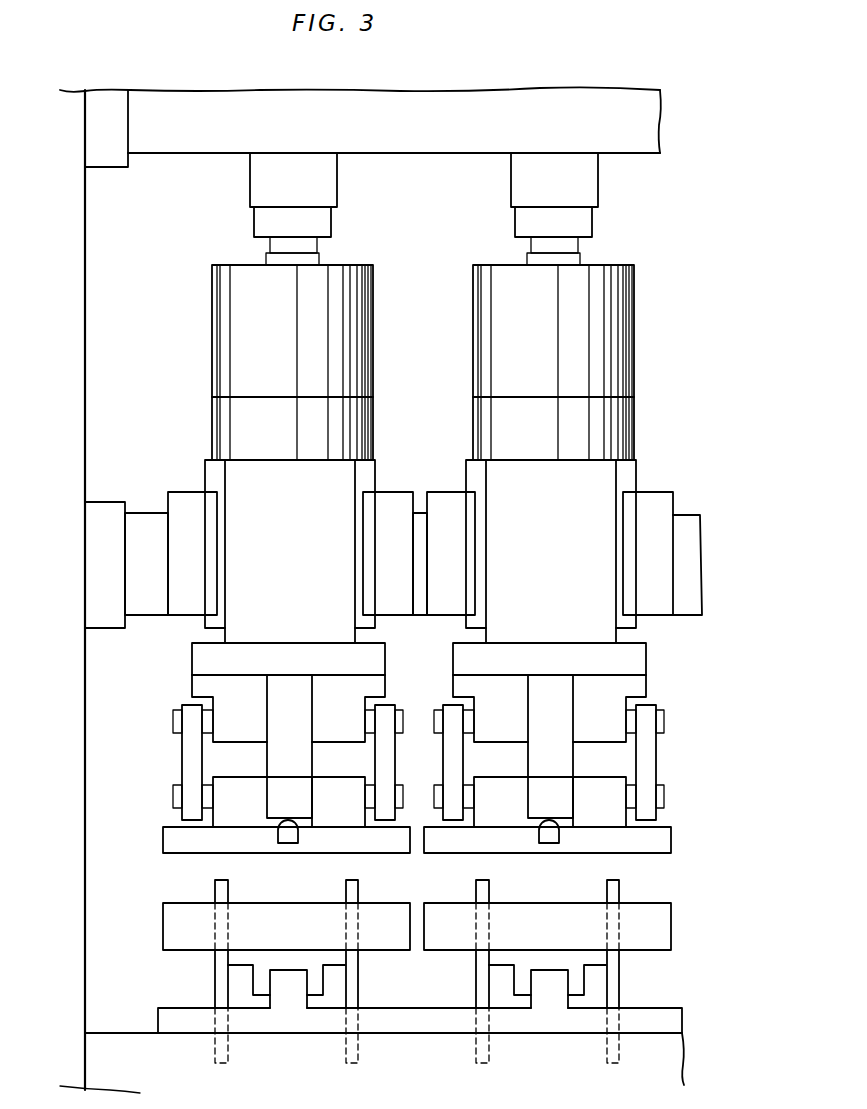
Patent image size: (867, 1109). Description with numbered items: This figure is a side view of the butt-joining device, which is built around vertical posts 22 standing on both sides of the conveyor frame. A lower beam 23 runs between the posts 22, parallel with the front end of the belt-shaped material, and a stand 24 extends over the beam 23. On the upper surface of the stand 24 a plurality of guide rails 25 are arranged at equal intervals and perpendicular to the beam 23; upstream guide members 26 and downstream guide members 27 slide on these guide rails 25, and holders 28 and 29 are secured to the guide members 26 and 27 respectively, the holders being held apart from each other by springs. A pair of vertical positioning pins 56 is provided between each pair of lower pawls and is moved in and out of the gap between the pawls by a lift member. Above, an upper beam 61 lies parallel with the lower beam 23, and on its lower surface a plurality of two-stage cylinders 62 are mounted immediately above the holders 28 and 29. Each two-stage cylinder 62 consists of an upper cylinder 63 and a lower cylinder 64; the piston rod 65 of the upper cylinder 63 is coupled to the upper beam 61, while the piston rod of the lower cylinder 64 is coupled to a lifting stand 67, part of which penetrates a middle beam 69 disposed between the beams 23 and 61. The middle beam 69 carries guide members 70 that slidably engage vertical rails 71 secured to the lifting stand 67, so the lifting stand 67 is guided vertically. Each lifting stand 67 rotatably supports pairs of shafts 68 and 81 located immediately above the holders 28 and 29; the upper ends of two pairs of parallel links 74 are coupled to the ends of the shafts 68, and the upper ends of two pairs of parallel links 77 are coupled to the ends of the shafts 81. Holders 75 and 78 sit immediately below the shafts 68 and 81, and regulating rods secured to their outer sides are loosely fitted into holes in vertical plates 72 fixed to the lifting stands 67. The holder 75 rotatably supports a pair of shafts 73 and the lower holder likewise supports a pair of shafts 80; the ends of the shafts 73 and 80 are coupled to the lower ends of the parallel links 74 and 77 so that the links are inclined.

The vertical posts 22 is at (68, 366).
The beam 23 is at (122, 1045).
The stand 24 is at (652, 1018).
The guide rails 25 is at (287, 992).
The guide members 26 is at (417, 952).
The guide members 27 is at (287, 960).
The holders 28 is at (428, 926).
The holders 29 is at (170, 925).
The positioning pins 56 is at (346, 888).
The upper beam 61 is at (427, 145).
The two-stage cylinders 62 is at (456, 362).
The upper cylinder 63 is at (370, 312).
The lower cylinder 64 is at (367, 423).
The piston rod 65 is at (308, 243).
The lifting stand 67 is at (200, 658).
The shafts 68 is at (418, 717).
The middle beam 69 is at (690, 552).
The guide members 70 is at (370, 546).
The vertical rails 71 is at (210, 475).
The vertical plates 72 is at (308, 695).
The shafts 73 is at (418, 794).
The parallel links 74 is at (426, 762).
The holders 75 is at (477, 784).
The parallel links 77 is at (190, 757).
The holders 78 is at (339, 790).
The shafts 80 is at (175, 797).
The shafts 81 is at (175, 722).